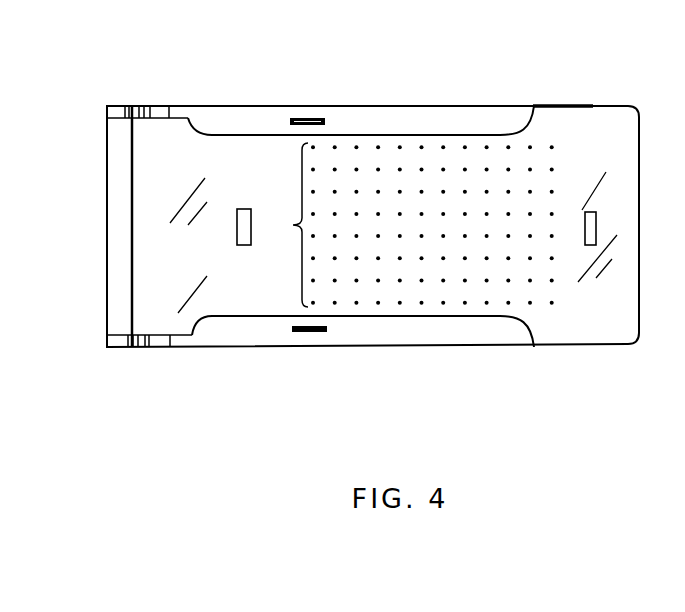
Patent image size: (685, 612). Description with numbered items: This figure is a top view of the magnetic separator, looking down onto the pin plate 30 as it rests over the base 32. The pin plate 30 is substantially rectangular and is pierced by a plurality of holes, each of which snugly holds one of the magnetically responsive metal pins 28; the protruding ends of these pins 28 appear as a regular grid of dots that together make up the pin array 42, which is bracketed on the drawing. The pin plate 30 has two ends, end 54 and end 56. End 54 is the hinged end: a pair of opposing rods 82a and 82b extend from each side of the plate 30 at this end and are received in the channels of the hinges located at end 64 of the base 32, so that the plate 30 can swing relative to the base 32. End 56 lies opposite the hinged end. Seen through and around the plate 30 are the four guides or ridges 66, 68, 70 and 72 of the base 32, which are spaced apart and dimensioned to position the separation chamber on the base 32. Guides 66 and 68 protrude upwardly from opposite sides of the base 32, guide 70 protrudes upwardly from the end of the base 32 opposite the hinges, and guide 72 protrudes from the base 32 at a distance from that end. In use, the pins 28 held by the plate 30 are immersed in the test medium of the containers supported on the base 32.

The magnetically responsive metal elements or pins 28 is at (485, 147).
The pin plate 30 is at (173, 143).
The base 32 is at (242, 338).
The pin array 42 is at (293, 225).
The end of pin plate 54 is at (128, 222).
The end of pin plate 56 is at (641, 210).
The end of base 64 is at (108, 260).
The guide or ridge 66 is at (305, 332).
The guide or ridge 68 is at (307, 118).
The guide or ridge 70 is at (590, 212).
The guide or ridge 72 is at (237, 229).
The pin or rod 82a is at (137, 110).
The pin or rod 82b is at (139, 347).